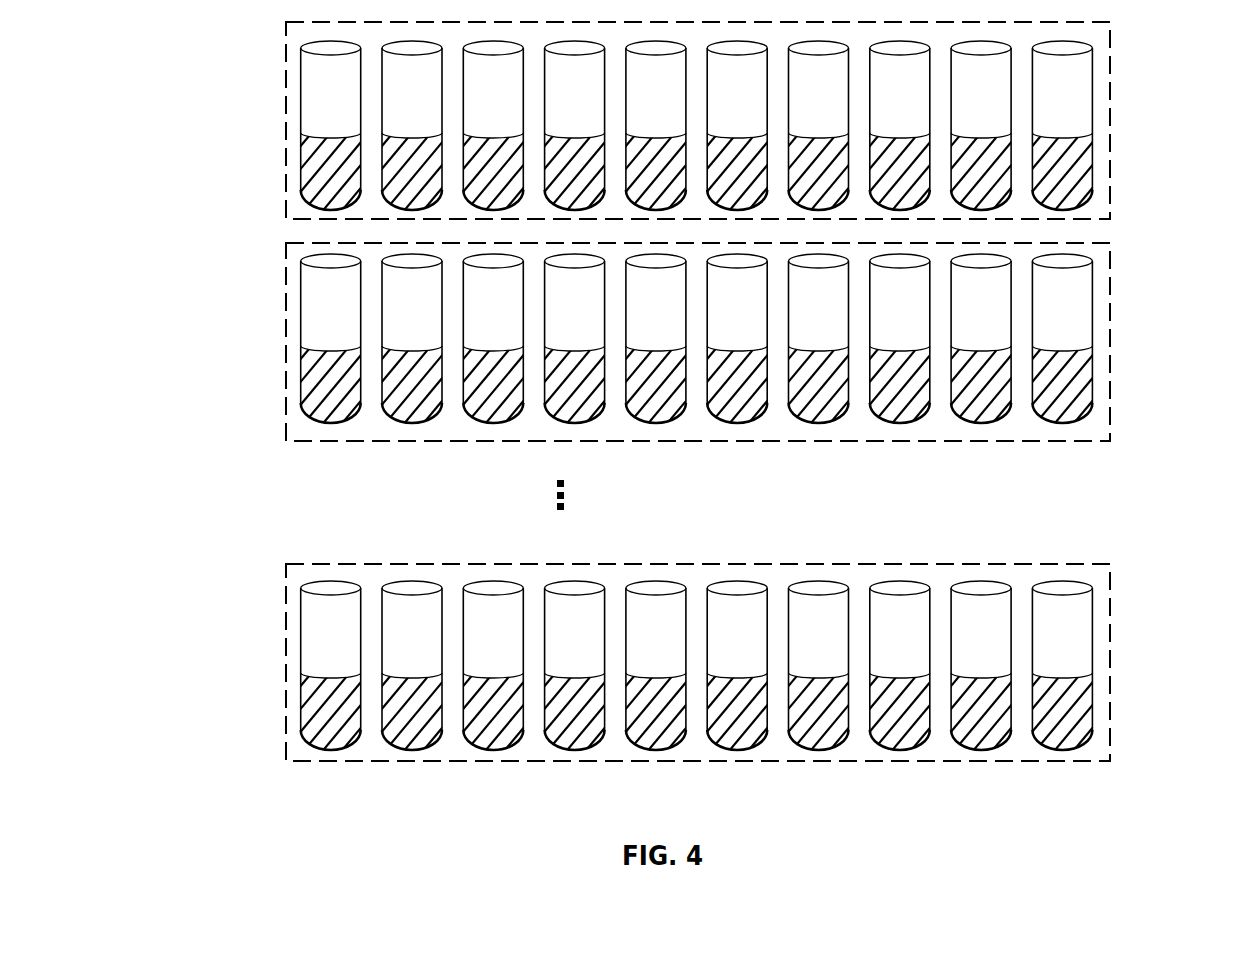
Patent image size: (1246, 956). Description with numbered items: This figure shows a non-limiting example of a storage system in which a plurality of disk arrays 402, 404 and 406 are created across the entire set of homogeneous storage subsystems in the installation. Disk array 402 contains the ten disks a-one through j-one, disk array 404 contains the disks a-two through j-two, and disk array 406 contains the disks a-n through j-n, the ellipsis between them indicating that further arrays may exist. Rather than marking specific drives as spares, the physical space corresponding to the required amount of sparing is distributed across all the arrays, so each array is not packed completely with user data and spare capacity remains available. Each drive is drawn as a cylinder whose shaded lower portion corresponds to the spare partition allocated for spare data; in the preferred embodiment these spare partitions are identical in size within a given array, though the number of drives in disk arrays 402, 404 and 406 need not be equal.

The disk array 402 is at (1110, 95).
The disk array 404 is at (1110, 358).
The disk array 406 is at (1110, 677).